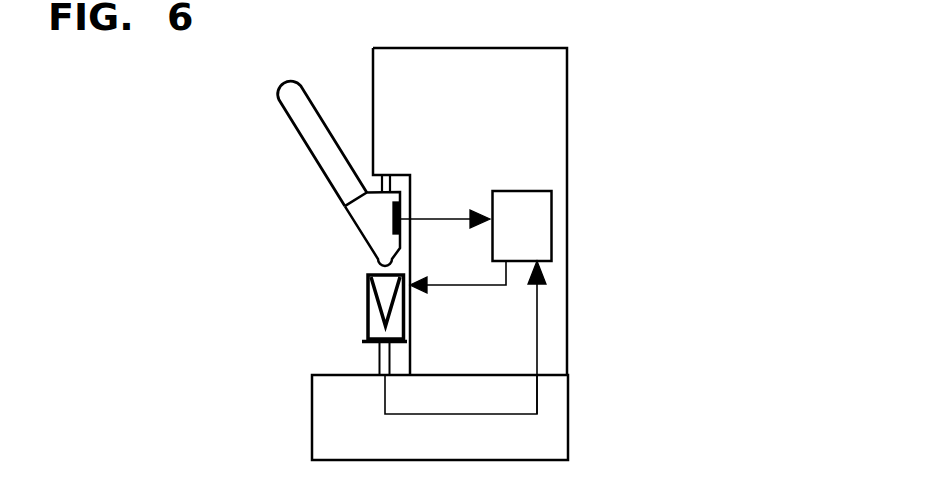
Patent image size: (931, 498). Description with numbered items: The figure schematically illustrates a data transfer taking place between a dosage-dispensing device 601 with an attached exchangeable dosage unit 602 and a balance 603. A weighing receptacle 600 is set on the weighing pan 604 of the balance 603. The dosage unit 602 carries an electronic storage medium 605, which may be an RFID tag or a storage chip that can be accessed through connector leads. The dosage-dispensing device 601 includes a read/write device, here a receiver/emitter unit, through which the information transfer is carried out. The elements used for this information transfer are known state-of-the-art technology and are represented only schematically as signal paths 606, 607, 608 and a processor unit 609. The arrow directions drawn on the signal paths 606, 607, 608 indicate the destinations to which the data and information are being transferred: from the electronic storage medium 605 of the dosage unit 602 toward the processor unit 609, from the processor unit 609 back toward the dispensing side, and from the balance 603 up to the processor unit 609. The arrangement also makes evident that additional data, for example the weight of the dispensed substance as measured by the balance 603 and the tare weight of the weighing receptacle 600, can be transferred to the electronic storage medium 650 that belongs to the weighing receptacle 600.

The dosage-dispensing device 601 is at (514, 127).
The exchangeable dosage unit 602 is at (337, 167).
The electronic storage medium 605 is at (393, 223).
The electronic storage medium 650 is at (401, 281).
The weighing receptacle 600 is at (375, 318).
The weighing pan 604 is at (383, 360).
The balance 603 is at (340, 408).
The signal path 606 is at (445, 213).
The signal path 607 is at (461, 395).
The signal path 608 is at (458, 277).
The processor unit 609 is at (523, 225).